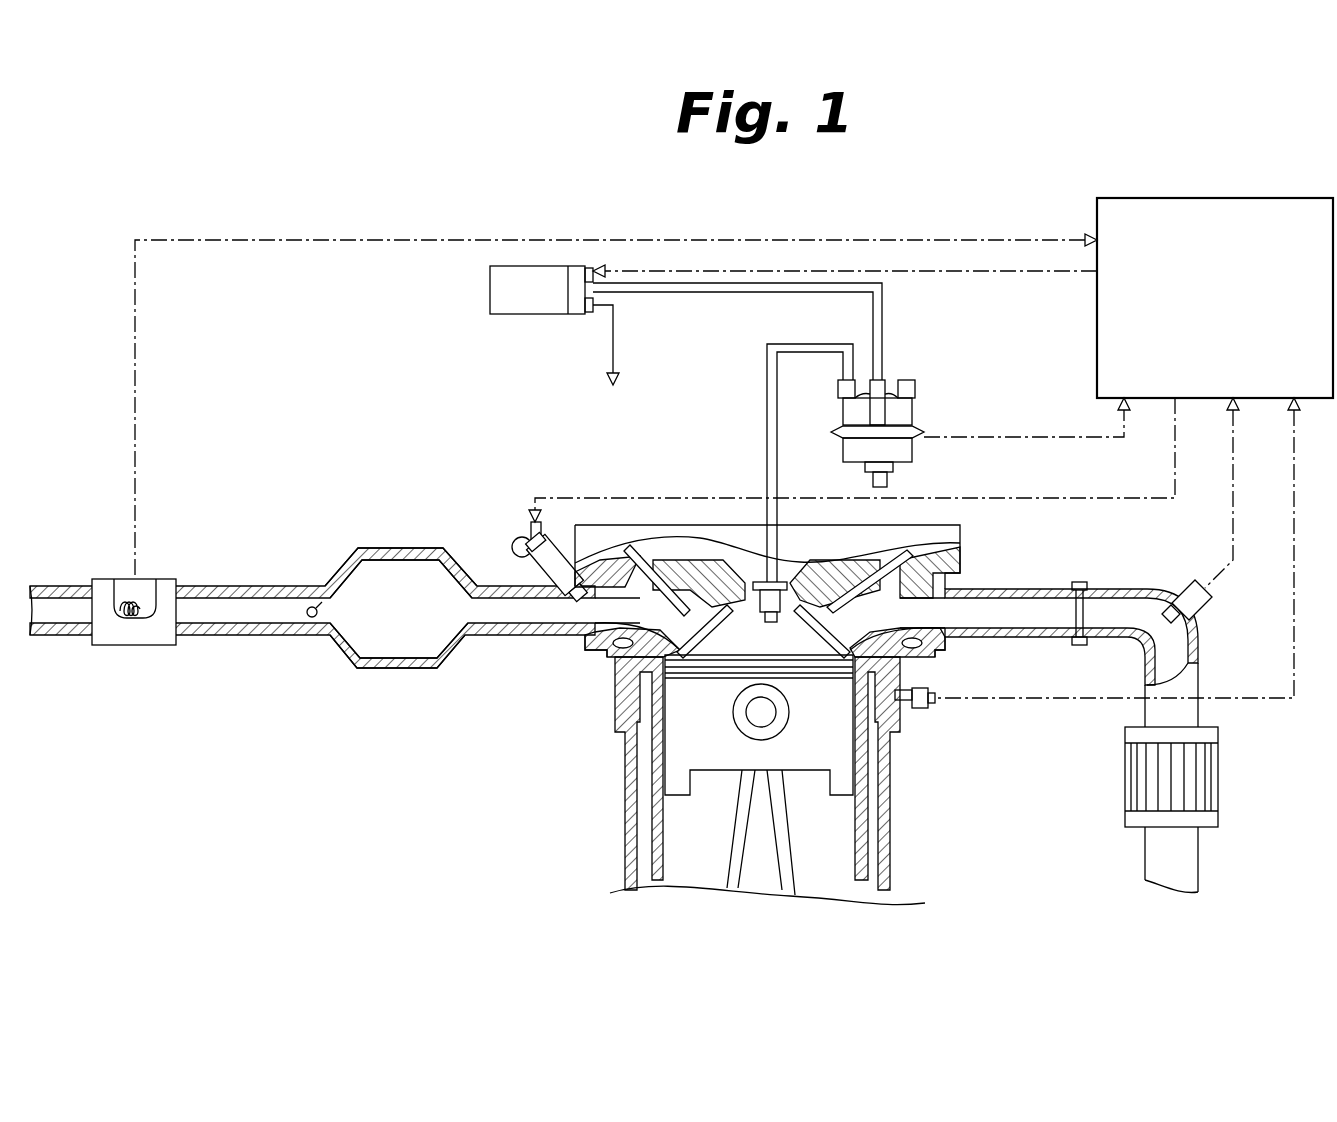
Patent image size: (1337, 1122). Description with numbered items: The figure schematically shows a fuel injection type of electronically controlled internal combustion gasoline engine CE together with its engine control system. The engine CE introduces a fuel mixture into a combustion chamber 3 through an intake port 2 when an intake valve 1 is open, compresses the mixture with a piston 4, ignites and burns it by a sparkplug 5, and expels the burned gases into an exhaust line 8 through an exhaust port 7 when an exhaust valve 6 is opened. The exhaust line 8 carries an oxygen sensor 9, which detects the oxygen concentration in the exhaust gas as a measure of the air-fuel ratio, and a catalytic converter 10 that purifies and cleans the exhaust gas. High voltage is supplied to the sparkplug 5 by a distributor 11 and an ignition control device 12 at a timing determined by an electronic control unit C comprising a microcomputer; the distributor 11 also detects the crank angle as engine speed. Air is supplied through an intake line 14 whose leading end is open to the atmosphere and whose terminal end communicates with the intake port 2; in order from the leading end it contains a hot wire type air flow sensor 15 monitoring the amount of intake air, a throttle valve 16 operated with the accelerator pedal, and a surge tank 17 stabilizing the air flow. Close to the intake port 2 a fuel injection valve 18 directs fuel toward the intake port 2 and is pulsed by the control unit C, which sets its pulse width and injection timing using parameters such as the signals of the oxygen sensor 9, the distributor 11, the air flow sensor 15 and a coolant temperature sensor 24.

The intake valve 1 is at (672, 608).
The intake port 2 is at (605, 652).
The combustion chamber 3 is at (768, 600).
The piston 4 is at (837, 783).
The sparkplug 5 is at (760, 582).
The exhaust valve 6 is at (850, 612).
The exhaust port 7 is at (922, 650).
The exhaust line 8 is at (1040, 625).
The oxygen sensor 9 is at (1213, 603).
The catalytic converter 10 is at (1202, 782).
The distributor 11 is at (918, 388).
The ignition control device 12 is at (507, 314).
The intake line 14 is at (527, 633).
The air flow sensor 15 is at (101, 579).
The throttle valve 16 is at (310, 617).
The surge tank 17 is at (400, 666).
The fuel injection valve 18 is at (548, 580).
The temperature sensor 24 is at (930, 708).
The electronic control unit (ECU) C is at (1226, 198).
The engine CE is at (484, 857).